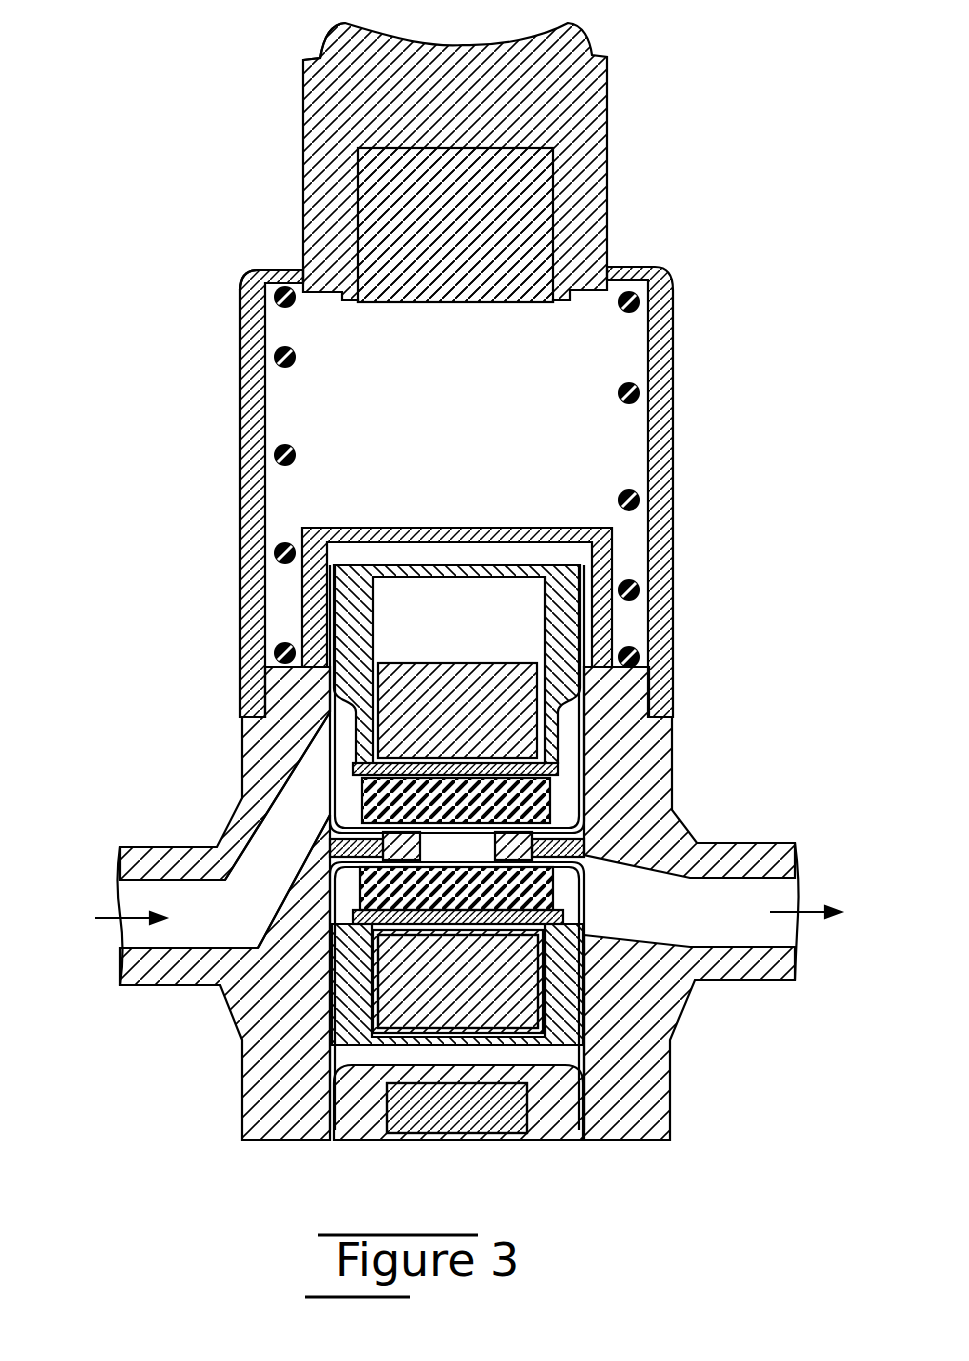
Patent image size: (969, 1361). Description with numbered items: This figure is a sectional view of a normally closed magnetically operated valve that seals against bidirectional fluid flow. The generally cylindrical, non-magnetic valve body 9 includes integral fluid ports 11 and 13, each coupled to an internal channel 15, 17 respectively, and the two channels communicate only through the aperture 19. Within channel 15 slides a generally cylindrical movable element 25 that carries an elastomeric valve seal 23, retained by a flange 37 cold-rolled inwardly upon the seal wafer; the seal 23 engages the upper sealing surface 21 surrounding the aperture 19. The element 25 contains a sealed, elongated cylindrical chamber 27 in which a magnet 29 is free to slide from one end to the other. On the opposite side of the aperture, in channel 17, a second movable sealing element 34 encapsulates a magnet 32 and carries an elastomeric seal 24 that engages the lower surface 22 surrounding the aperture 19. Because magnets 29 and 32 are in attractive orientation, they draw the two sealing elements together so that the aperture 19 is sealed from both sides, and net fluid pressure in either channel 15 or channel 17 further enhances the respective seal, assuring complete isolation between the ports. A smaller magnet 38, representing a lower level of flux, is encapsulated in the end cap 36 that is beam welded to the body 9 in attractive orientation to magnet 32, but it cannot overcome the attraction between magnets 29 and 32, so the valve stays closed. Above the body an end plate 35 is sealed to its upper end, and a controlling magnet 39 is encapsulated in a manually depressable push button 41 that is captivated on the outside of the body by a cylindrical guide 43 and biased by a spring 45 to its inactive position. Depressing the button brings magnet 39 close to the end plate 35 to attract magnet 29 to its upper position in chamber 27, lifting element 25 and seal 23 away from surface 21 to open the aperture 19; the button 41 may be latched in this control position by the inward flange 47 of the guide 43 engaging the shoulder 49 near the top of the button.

The valve body 9 is at (672, 745).
The fluid port 11 is at (198, 937).
The fluid port 13 is at (758, 931).
The internal channel 15 is at (330, 738).
The internal channel 17 is at (582, 1057).
The aperture 19 is at (332, 810).
The sealing surface 21 is at (491, 828).
The lower surface 22 is at (558, 884).
The elastomeric valve seal 23 is at (560, 803).
The elastomeric seal 24 is at (360, 900).
The movable element 25 is at (575, 643).
The internal chamber 27 is at (424, 578).
The magnet 29 is at (472, 673).
The magnet 32 is at (572, 937).
The movable sealing element 34 is at (572, 1017).
The end plate 35 is at (537, 532).
The end cap 36 is at (558, 1130).
The flange 37 is at (332, 846).
The magnet 38 is at (408, 1133).
The magnet 39 is at (478, 302).
The push button 41 is at (602, 130).
The cylindrical guide 43 is at (672, 345).
The spring 45 is at (641, 508).
The inward flange 47 is at (290, 270).
The shoulder 49 is at (318, 58).